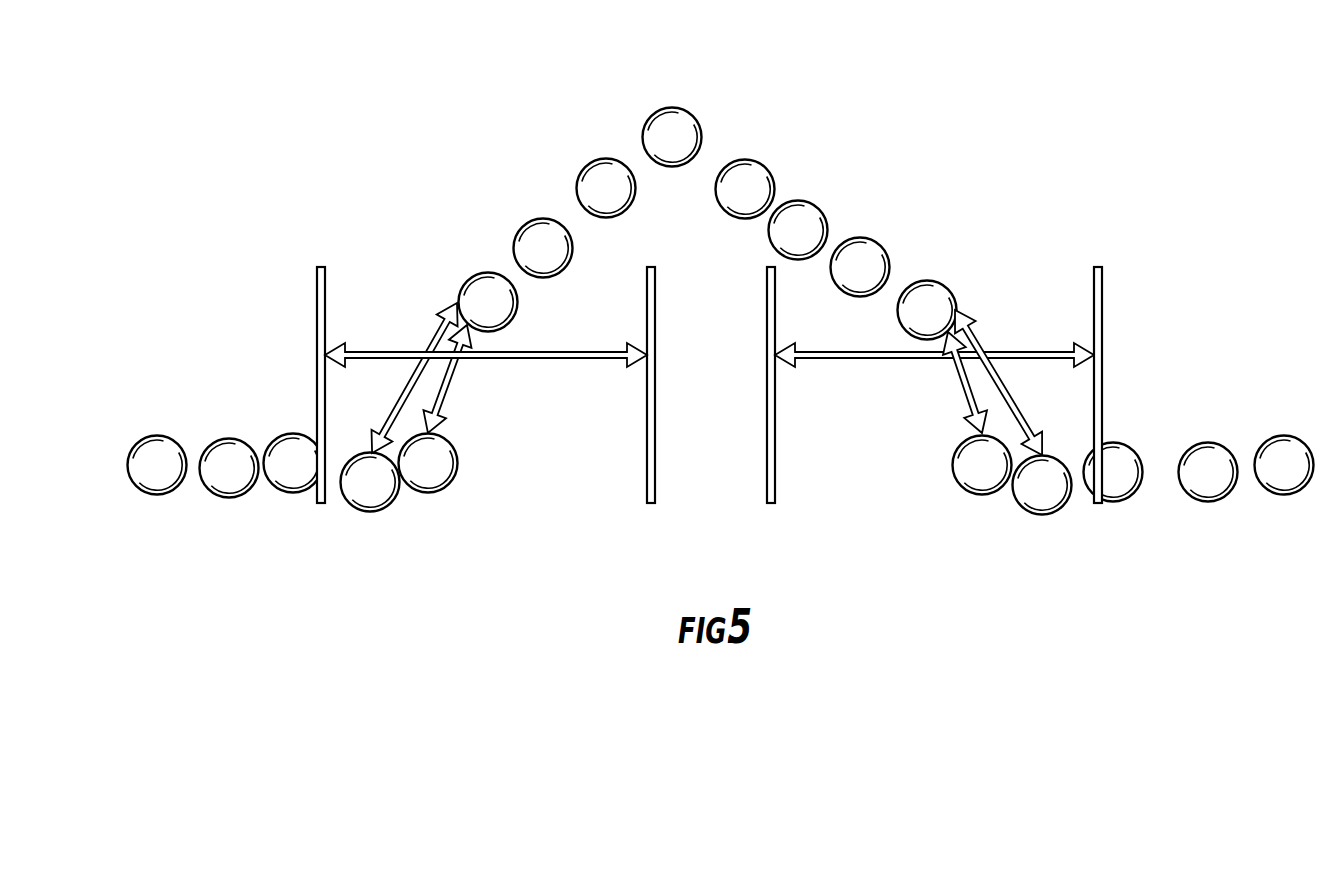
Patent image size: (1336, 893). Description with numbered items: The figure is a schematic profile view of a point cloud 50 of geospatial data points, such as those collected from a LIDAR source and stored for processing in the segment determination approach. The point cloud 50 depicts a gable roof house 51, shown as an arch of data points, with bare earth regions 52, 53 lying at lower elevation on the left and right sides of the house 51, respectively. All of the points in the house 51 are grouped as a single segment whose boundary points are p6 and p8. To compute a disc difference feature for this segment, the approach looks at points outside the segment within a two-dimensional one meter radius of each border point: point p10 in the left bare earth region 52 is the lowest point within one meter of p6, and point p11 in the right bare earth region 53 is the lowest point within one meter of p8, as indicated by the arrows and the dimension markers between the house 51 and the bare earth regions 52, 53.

The point cloud 50 is at (1167, 238).
The gable roof house 51 is at (935, 78).
The bare earth region 52 is at (440, 78).
The bare earth region 53 is at (1285, 78).